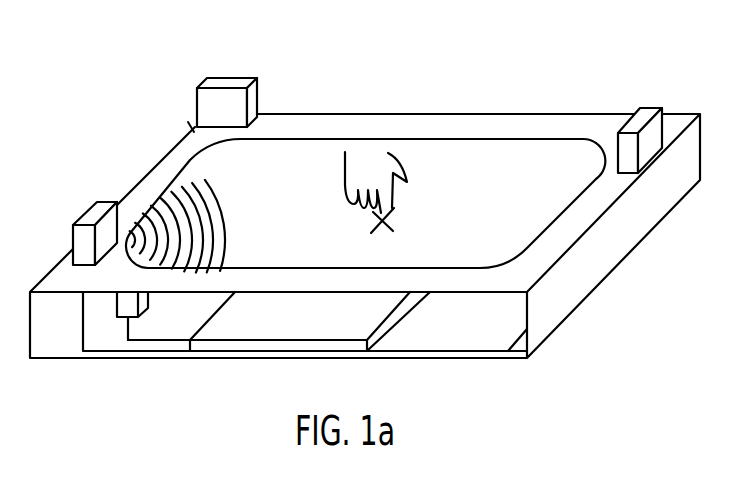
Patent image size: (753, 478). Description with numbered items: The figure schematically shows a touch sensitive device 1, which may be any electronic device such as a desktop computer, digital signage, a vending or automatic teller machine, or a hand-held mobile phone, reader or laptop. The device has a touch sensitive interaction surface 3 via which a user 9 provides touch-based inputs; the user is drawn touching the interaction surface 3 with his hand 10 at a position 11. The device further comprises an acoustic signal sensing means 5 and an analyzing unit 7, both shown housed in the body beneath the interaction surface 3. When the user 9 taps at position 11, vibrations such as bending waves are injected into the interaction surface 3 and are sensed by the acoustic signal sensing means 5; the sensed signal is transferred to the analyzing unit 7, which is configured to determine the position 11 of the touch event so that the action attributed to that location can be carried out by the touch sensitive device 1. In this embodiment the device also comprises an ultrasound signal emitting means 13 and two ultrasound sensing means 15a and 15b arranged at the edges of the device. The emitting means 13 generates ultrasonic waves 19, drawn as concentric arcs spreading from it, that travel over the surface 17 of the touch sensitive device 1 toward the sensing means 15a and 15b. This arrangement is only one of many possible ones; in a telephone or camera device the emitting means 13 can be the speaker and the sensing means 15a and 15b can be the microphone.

The touch sensitive device 1 is at (654, 69).
The touch sensitive interaction surface 3 is at (552, 262).
The acoustic signal sensing means 5 is at (123, 310).
The analyzing unit 7 is at (240, 348).
The user 9 is at (415, 150).
The hand 10 is at (350, 163).
The position of the touch event 11 is at (382, 235).
The ultrasound signal emitting means 13 is at (97, 209).
The ultrasound sensing means 15a is at (650, 147).
The ultrasound sensing means 15b is at (232, 78).
The surface of the touch sensitive device 17 is at (192, 125).
The ultrasonic waves 19 is at (168, 208).